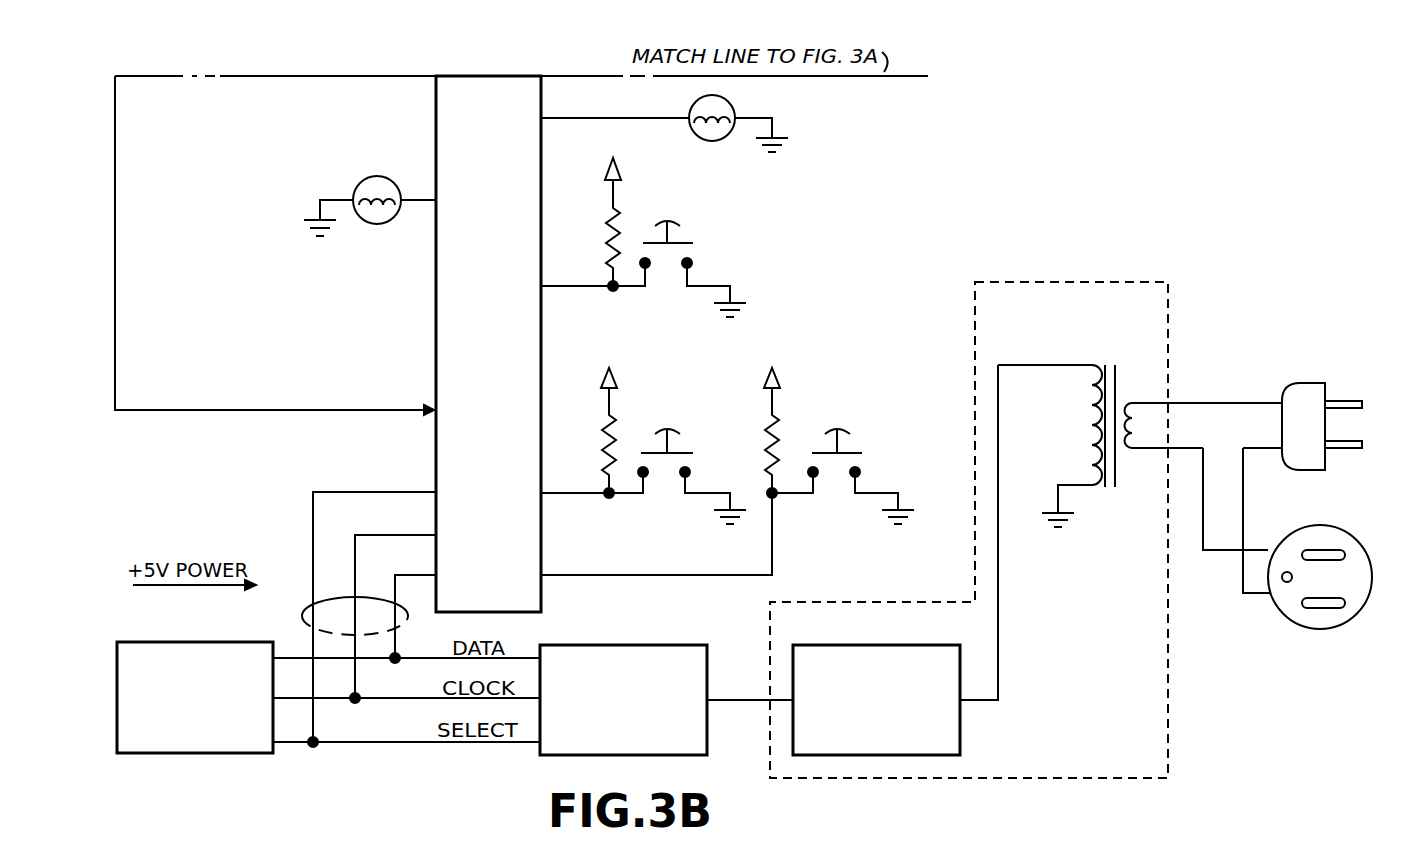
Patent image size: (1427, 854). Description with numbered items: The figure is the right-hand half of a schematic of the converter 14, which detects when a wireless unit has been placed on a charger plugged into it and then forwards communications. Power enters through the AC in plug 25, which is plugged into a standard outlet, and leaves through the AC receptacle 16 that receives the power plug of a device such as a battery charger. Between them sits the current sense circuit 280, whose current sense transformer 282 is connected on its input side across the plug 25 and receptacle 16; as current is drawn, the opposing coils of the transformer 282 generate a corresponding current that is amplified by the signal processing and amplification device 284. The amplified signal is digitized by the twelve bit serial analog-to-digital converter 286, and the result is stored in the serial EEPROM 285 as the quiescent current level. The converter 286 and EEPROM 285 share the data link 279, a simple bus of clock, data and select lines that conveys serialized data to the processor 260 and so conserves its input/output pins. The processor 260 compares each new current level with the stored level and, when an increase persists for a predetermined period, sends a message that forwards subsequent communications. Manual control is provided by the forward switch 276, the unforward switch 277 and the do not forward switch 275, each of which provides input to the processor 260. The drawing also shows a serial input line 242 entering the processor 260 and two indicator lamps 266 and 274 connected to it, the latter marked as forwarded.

The converter 14 is at (1188, 658).
The AC receptacle 16 is at (1326, 525).
The AC in plug 25 is at (1313, 383).
The serial input line 242 is at (116, 218).
The processor 260 is at (494, 148).
The indicator lamp 266 is at (384, 176).
The forwarded indicator lamp 274 is at (616, 118).
The do not forward switch 275 is at (838, 423).
The forward switch 276 is at (673, 216).
The unforward switch 277 is at (671, 423).
The data link 279 is at (310, 600).
The current sense circuit 280 is at (1053, 282).
The current sense transformer 282 is at (1130, 442).
The signal processing and amplification device 284 is at (898, 645).
The serial EEPROM 285 is at (137, 642).
The serial analog-to-digital converter 286 is at (650, 645).